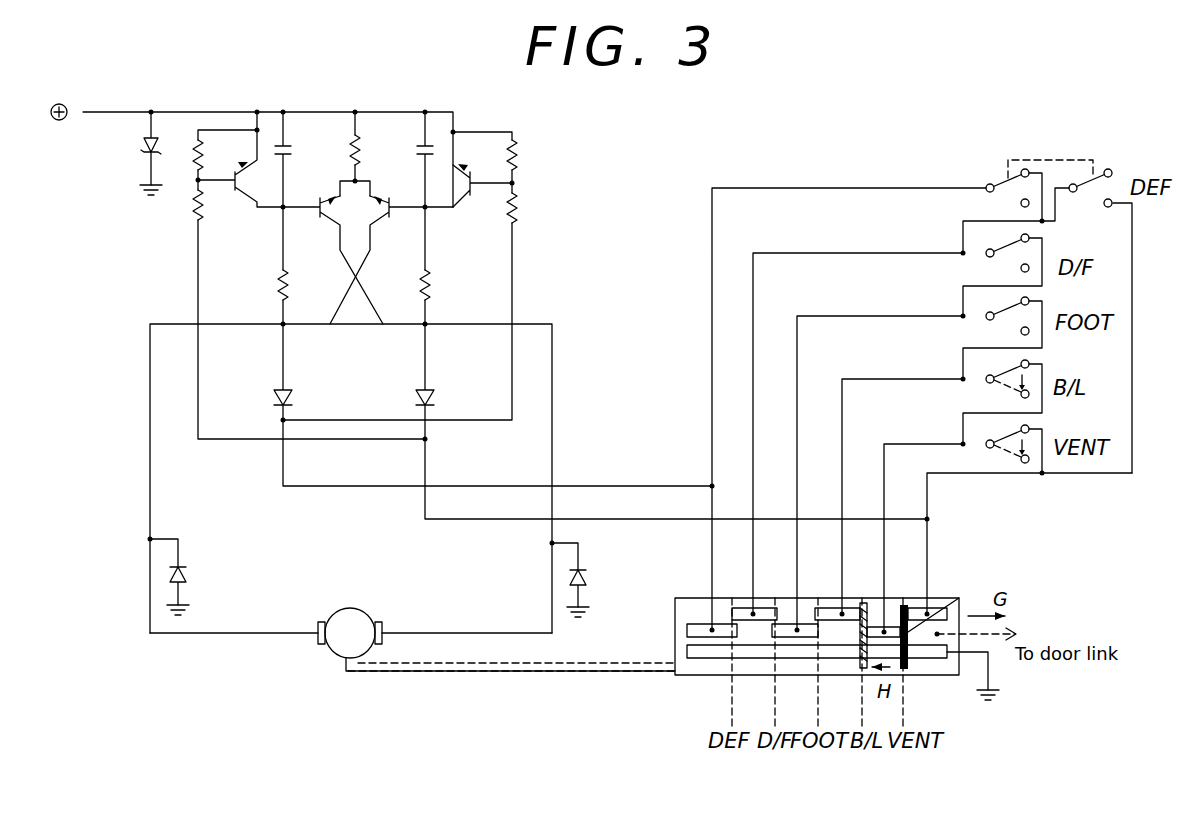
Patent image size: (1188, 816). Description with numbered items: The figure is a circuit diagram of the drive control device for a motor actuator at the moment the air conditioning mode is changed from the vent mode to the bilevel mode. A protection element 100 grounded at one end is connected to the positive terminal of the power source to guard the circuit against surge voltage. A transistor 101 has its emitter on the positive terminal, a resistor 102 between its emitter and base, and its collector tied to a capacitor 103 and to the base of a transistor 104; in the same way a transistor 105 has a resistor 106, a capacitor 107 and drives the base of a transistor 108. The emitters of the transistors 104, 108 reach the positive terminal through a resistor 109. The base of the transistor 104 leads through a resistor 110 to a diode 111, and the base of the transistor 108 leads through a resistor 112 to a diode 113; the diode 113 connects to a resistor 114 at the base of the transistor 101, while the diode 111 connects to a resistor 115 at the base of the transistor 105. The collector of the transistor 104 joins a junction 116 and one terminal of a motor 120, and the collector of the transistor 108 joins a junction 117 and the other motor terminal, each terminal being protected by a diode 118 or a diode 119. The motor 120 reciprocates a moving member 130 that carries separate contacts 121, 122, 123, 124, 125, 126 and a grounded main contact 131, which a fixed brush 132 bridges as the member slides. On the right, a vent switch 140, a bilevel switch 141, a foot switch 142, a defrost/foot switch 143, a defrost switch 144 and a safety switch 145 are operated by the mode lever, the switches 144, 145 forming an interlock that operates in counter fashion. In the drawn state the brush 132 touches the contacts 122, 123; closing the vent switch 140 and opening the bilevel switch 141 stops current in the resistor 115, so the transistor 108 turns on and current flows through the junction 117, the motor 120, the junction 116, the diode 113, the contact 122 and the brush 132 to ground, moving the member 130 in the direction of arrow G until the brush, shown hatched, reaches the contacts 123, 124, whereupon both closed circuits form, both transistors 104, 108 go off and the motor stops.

The protection element 100 is at (145, 151).
The transistor 101 is at (244, 193).
The resistor 102 is at (188, 153).
The capacitor 103 is at (272, 149).
The transistor 104 is at (315, 214).
The transistor 105 is at (478, 208).
The resistor 106 is at (518, 157).
The capacitor 107 is at (418, 154).
The transistor 108 is at (396, 214).
The resistor 109 is at (347, 146).
The resistor 110 is at (276, 283).
The diode 111 is at (295, 397).
The resistor 112 is at (432, 283).
The diode 113 is at (437, 397).
The resistor 114 is at (194, 210).
The resistor 115 is at (518, 210).
The junction 116 is at (428, 326).
The junction 117 is at (281, 331).
The diode 118 is at (190, 572).
The diode 119 is at (590, 573).
The motor 120 is at (350, 607).
The separate contact 121 is at (697, 609).
The separate contact 122 is at (913, 603).
The separate contact 123 is at (870, 603).
The separate contact 124 is at (825, 599).
The separate contact 125 is at (783, 611).
The separate contact 126 is at (742, 599).
The moving member 130 is at (712, 676).
The main contact 131 is at (925, 670).
The brush 132 is at (858, 670).
The vent switch 140 is at (1006, 457).
The bilevel switch 141 is at (1006, 395).
The foot switch 142 is at (1010, 332).
The defrost/foot switch 143 is at (1010, 267).
The defrost switch 144 is at (1010, 202).
The safety switch 145 is at (1090, 206).